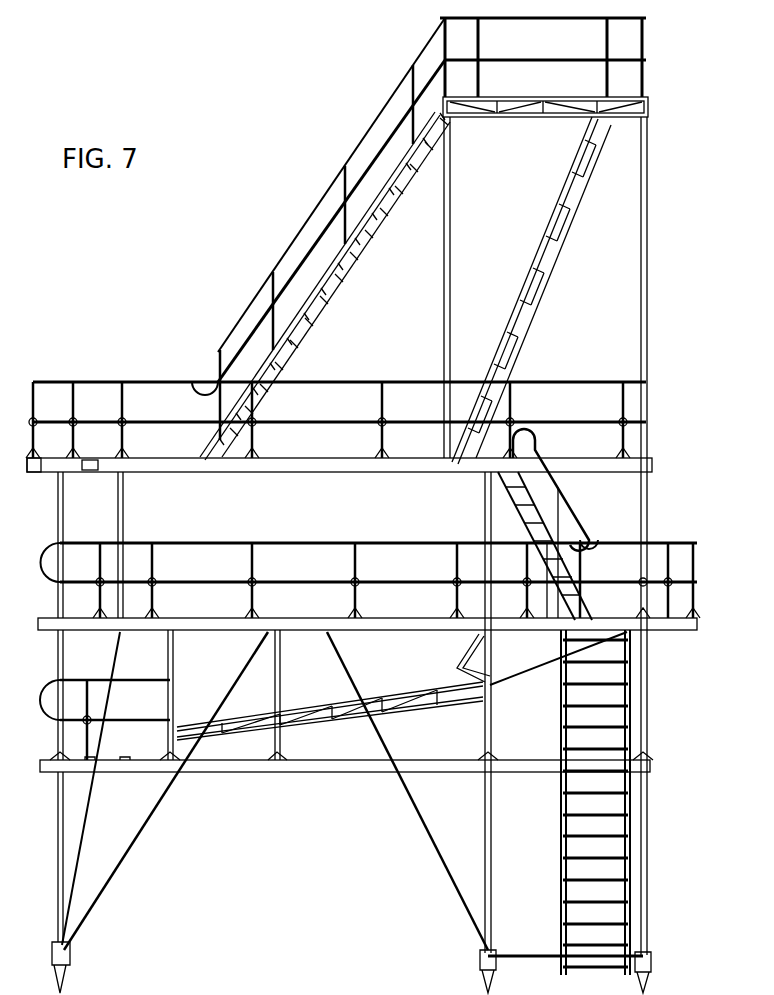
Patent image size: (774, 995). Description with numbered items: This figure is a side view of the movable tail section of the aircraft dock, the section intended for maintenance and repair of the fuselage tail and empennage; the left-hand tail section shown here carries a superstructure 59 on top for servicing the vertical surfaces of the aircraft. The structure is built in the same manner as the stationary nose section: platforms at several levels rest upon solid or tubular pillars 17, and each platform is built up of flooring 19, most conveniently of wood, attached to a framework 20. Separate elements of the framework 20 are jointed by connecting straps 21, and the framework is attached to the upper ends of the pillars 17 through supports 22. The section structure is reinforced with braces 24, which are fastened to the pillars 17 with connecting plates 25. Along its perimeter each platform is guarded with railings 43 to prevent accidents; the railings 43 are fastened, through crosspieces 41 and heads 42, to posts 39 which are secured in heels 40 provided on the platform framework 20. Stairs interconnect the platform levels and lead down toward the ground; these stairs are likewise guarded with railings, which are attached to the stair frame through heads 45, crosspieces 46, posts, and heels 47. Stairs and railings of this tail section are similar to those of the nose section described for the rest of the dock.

The pillar 17 is at (64, 520).
The flooring 19 is at (110, 457).
The framework 20 is at (36, 474).
The connecting strap 21 is at (90, 457).
The support 22 is at (56, 617).
The brace 24 is at (153, 768).
The connecting plate 25 is at (497, 763).
The post 39 is at (125, 400).
The heel 40 is at (127, 457).
The crosspiece 41 is at (388, 425).
The head 42 is at (512, 382).
The railing 43 is at (540, 382).
The head 45 is at (560, 490).
The crosspiece 46 is at (556, 537).
The heel 47 is at (588, 532).
The superstructure 59 is at (646, 108).